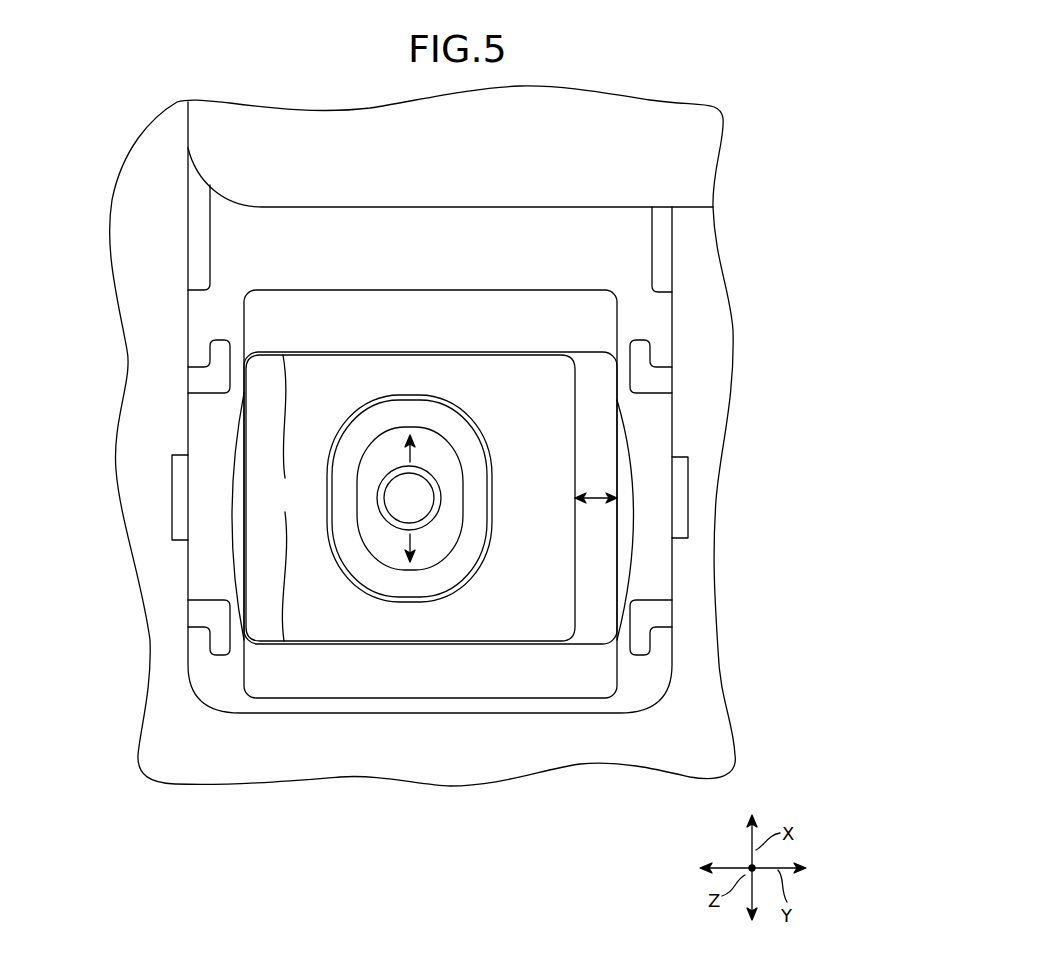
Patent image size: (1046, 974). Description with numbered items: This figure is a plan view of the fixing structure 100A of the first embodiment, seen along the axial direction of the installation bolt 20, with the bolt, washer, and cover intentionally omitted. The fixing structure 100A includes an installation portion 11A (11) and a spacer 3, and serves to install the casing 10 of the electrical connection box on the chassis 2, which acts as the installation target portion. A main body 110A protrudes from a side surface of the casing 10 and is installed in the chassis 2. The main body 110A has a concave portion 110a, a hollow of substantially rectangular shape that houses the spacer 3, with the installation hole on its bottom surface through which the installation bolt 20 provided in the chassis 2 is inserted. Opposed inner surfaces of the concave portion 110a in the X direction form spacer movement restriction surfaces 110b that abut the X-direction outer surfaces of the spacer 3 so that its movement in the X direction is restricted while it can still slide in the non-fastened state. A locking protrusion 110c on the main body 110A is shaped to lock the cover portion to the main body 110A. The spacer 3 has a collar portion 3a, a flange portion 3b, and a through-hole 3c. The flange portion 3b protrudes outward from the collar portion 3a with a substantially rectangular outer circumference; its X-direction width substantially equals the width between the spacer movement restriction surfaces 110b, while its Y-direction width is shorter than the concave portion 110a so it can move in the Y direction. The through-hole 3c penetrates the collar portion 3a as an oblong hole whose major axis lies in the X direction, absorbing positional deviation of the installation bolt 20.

The fixing structure 100A is at (754, 265).
The chassis 2 is at (682, 735).
The casing 10 is at (680, 172).
The installation portion 11 is at (522, 407).
The installation portion 11A is at (663, 688).
The main body 110A is at (641, 680).
The concave portion 110a is at (593, 601).
The spacer movement restriction surfaces 110b is at (433, 498).
The locking protrusion 110c is at (173, 497).
The spacer 3 is at (373, 372).
The collar portion 3a is at (472, 496).
The flange portion 3b is at (519, 392).
The through-hole 3c is at (455, 480).
The installation bolt 20 is at (413, 502).